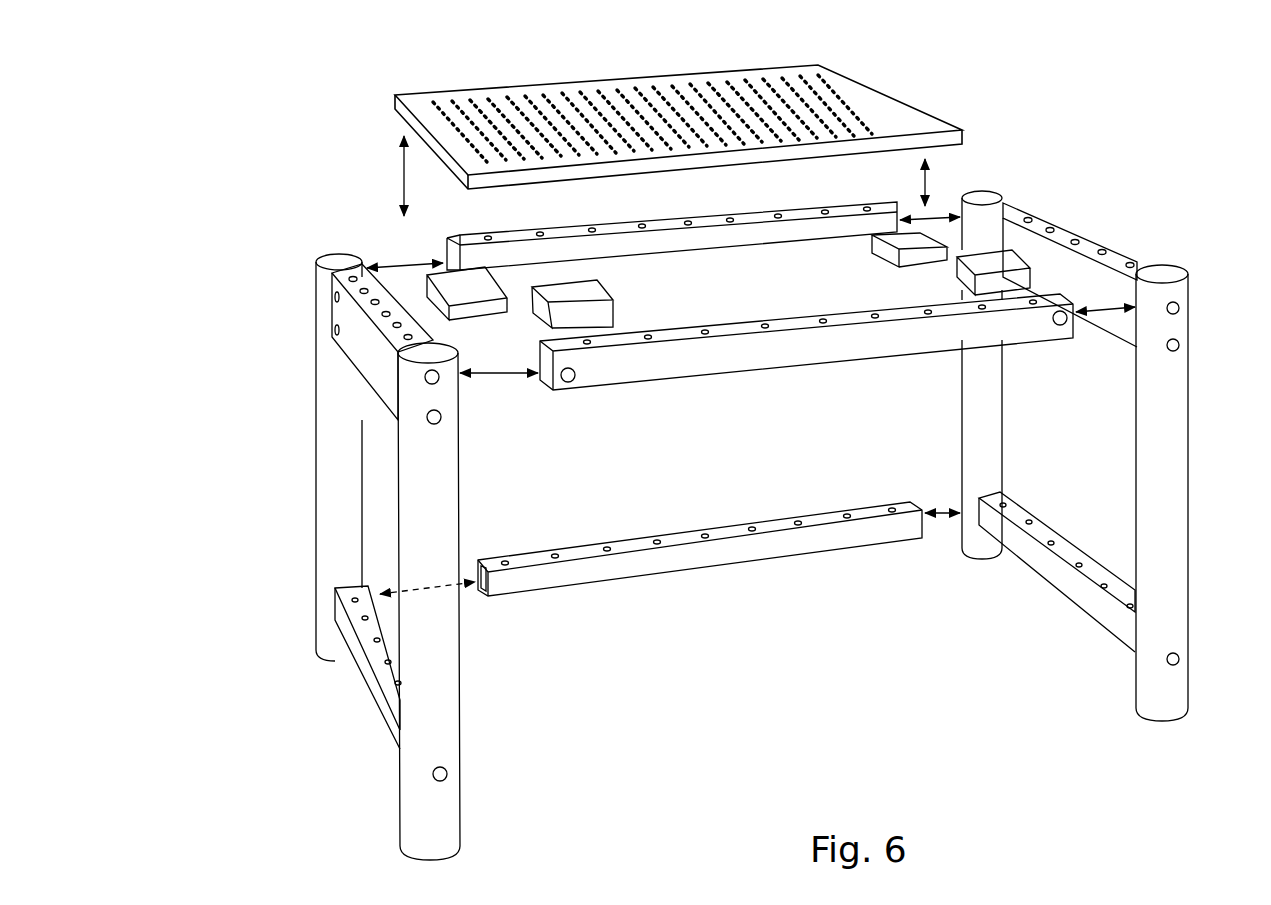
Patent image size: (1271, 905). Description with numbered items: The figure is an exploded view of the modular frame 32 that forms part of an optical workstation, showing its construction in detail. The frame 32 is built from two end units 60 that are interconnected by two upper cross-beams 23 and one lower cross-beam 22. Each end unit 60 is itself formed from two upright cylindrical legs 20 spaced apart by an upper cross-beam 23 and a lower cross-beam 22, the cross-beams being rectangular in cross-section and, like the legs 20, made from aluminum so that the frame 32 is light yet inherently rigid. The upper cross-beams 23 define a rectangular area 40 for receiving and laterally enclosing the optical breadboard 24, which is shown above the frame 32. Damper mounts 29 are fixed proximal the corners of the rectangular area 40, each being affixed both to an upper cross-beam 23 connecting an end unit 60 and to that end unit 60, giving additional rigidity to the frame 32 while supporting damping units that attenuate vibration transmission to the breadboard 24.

The optical breadboard 24 is at (527, 95).
The upper cross-beam 23 is at (663, 250).
The lower cross-beam 22 is at (735, 558).
The upright cylindrical leg 20 is at (347, 418).
The damper mount 29 is at (482, 307).
The end unit 60 is at (330, 240).
The rectangular area 40 is at (727, 305).
The frame 32 is at (265, 658).